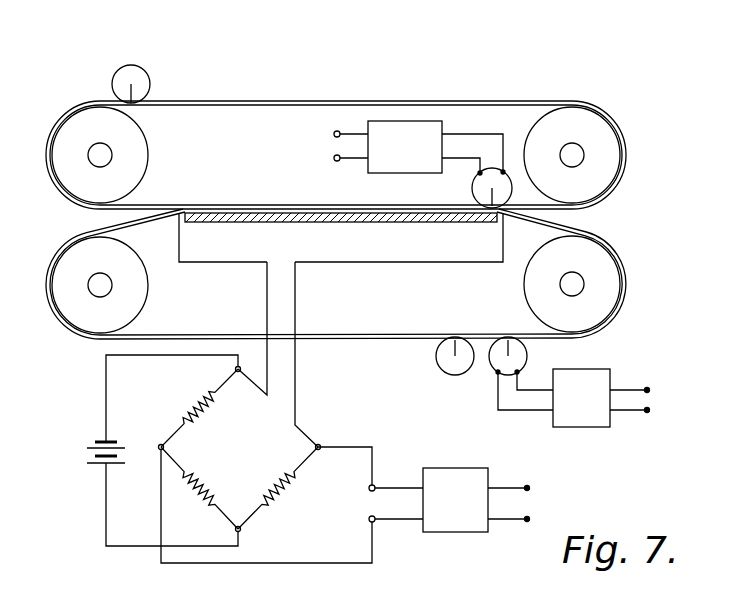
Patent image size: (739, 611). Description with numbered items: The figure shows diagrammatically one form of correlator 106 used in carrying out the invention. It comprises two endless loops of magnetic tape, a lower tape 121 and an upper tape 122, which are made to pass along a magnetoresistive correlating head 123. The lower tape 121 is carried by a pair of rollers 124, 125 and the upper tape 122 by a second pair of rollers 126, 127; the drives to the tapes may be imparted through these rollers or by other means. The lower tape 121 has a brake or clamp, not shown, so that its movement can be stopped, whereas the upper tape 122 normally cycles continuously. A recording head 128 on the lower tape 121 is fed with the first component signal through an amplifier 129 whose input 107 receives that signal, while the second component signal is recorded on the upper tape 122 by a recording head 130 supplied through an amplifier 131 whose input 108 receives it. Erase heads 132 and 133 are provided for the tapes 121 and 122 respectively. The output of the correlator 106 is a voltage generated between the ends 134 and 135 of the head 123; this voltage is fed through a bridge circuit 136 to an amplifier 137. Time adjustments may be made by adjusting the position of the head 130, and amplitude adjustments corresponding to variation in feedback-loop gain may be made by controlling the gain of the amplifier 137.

The correlator 106 is at (345, 397).
The input 107 is at (656, 397).
The input 108 is at (327, 147).
The lower tape 121 is at (228, 336).
The upper tape 122 is at (455, 103).
The magnetoresistive correlating head 123 is at (353, 216).
The roller 124 is at (152, 285).
The roller 125 is at (523, 284).
The roller 126 is at (152, 157).
The roller 127 is at (565, 125).
The recording head 128 is at (528, 356).
The amplifier 129 is at (585, 413).
The recording head 130 is at (472, 188).
The amplifier 131 is at (388, 131).
The erase head 132 is at (437, 357).
The erase head 133 is at (140, 48).
The end of head 134 is at (182, 210).
The end of head 135 is at (497, 221).
The bridge circuit 136 is at (258, 462).
The amplifier 137 is at (448, 522).